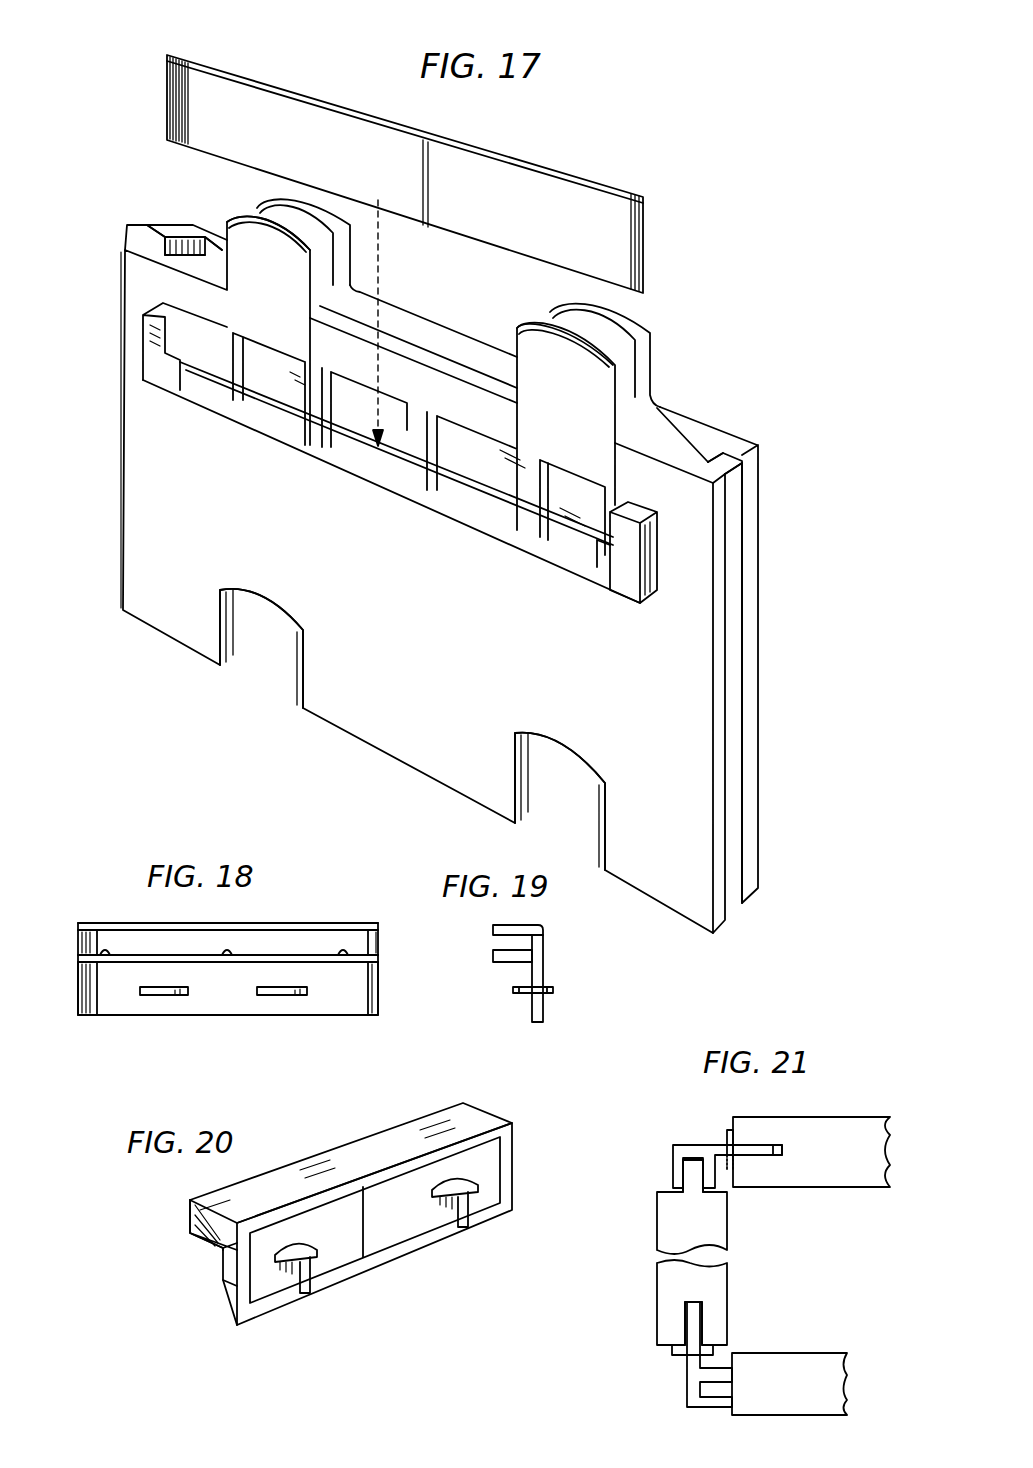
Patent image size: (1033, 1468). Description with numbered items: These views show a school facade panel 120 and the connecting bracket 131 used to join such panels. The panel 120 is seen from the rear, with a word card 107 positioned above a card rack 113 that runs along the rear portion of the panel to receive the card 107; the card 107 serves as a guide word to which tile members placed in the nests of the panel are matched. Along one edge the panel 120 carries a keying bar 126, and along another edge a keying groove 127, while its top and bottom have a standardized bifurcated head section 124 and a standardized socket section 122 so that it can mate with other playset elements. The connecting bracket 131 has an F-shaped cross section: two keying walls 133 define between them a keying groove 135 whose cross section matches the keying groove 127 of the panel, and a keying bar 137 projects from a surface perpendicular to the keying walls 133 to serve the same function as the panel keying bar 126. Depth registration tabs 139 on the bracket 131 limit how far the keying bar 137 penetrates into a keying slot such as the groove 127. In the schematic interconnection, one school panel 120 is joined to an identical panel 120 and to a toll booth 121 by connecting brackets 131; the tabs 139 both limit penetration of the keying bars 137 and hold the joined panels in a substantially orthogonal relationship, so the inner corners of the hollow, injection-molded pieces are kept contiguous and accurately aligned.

In FIG. 17, the word card 107 is at (640, 240).
In FIG. 17, the card rack 113 is at (625, 578).
In FIG. 17, the facade panel 120 is at (785, 642).
In FIG. 21, the facade panel 120 is at (648, 1298).
In FIG. 21, the toll booth 121 is at (857, 1125).
In FIG. 17, the socket section 122 is at (262, 668).
In FIG. 17, the bifurcated head section 124 is at (242, 205).
In FIG. 17, the keying bar 126 is at (137, 228).
In FIG. 21, the keying bar 126 is at (685, 1178).
In FIG. 17, the keying groove 127 is at (732, 462).
In FIG. 21, the keying groove 127 is at (776, 1145).
In FIG. 18, the connecting bracket 131 is at (88, 902).
In FIG. 20, the connecting bracket 131 is at (373, 1285).
In FIG. 21, the connecting bracket 131 is at (692, 1138).
In FIG. 18, the keying walls 133 is at (313, 958).
In FIG. 19, the keying walls 133 is at (493, 956).
In FIG. 20, the keying groove 135 is at (200, 1223).
In FIG. 18, the keying bar 137 is at (82, 990).
In FIG. 19, the keying bar 137 is at (543, 1012).
In FIG. 18, the depth registration tabs 139 is at (165, 997).
In FIG. 19, the depth registration tabs 139 is at (515, 990).
In FIG. 21, the depth registration tabs 139 is at (730, 1130).